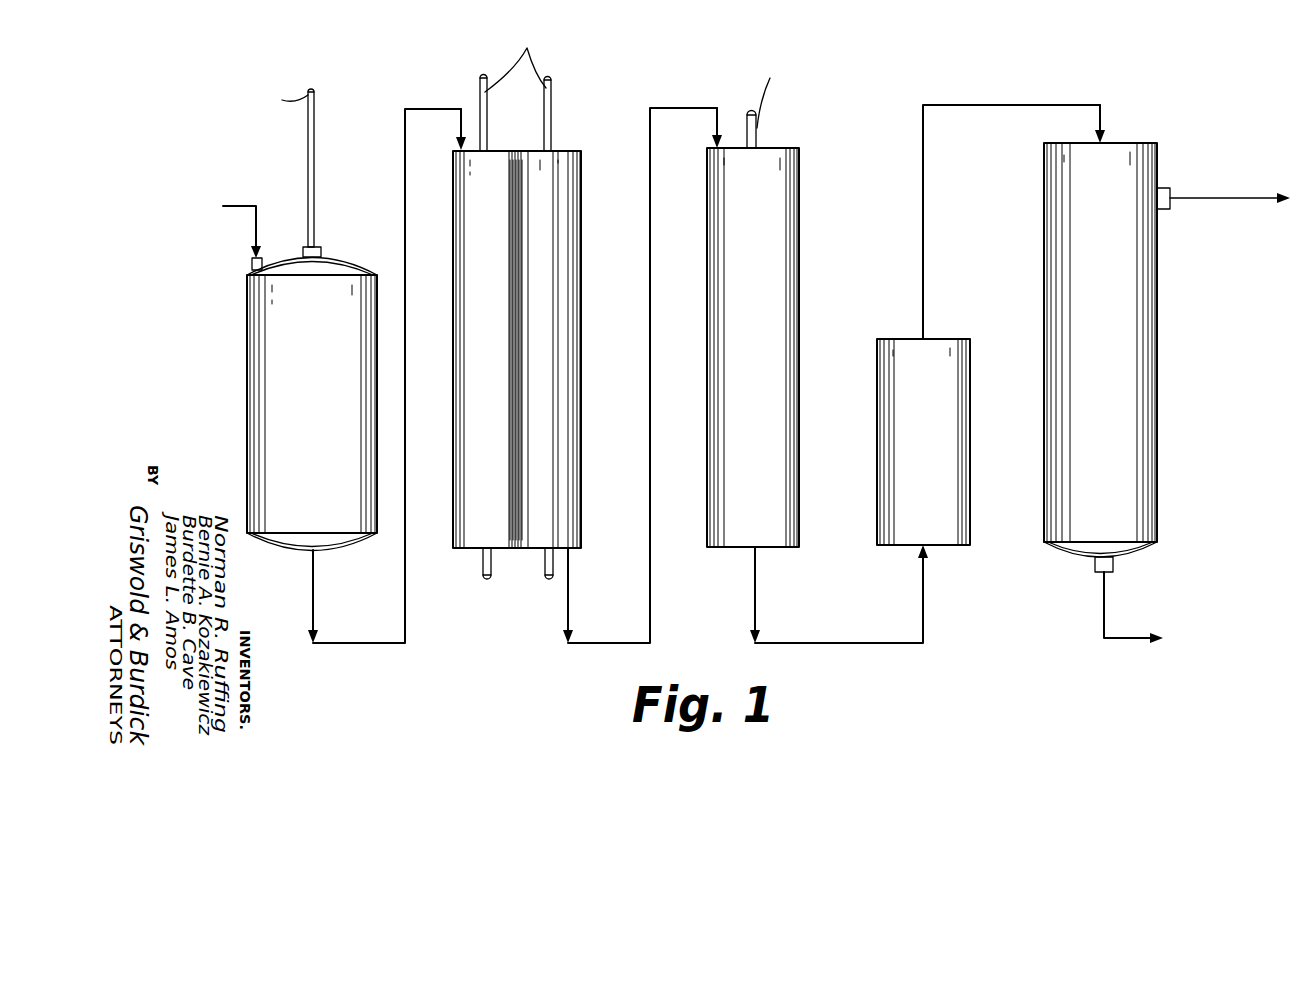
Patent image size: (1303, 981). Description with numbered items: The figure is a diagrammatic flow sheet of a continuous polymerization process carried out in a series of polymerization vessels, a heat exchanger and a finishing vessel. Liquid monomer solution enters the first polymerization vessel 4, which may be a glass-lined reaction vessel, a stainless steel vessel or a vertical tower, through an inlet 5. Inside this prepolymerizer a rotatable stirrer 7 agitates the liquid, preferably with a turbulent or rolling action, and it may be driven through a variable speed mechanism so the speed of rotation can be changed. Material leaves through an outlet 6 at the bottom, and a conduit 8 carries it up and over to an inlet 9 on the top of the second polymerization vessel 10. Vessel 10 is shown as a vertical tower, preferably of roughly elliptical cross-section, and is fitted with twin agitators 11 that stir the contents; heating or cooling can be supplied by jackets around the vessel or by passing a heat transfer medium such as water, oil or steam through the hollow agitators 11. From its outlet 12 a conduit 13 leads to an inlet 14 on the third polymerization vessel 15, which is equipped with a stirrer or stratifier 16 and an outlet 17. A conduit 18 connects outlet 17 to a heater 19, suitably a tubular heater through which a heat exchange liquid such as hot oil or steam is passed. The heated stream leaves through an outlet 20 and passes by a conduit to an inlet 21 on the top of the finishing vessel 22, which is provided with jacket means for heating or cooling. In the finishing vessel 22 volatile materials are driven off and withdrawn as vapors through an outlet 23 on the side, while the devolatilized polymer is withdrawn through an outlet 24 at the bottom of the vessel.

The polymerization vessel 4 is at (250, 366).
The inlet 5 is at (251, 264).
The outlet 6 is at (314, 590).
The rotatable stirrer 7 is at (307, 155).
The conduit 8 is at (404, 188).
The inlet 9 is at (460, 130).
The polymerization vessel 10 is at (456, 390).
The agitators 11 is at (545, 117).
The outlet 12 is at (572, 552).
The conduit 13 is at (650, 612).
The inlet 14 is at (714, 125).
The polymerization vessel 15 is at (708, 360).
The stirrer or stratifier 16 is at (758, 131).
The outlet 17 is at (756, 587).
The conduit 18 is at (850, 643).
The heater 19 is at (877, 425).
The outlet 20 is at (925, 335).
The inlet 21 is at (1103, 123).
The finishing vessel 22 is at (1045, 220).
The outlet 23 is at (1165, 212).
The outlet 24 is at (1096, 565).